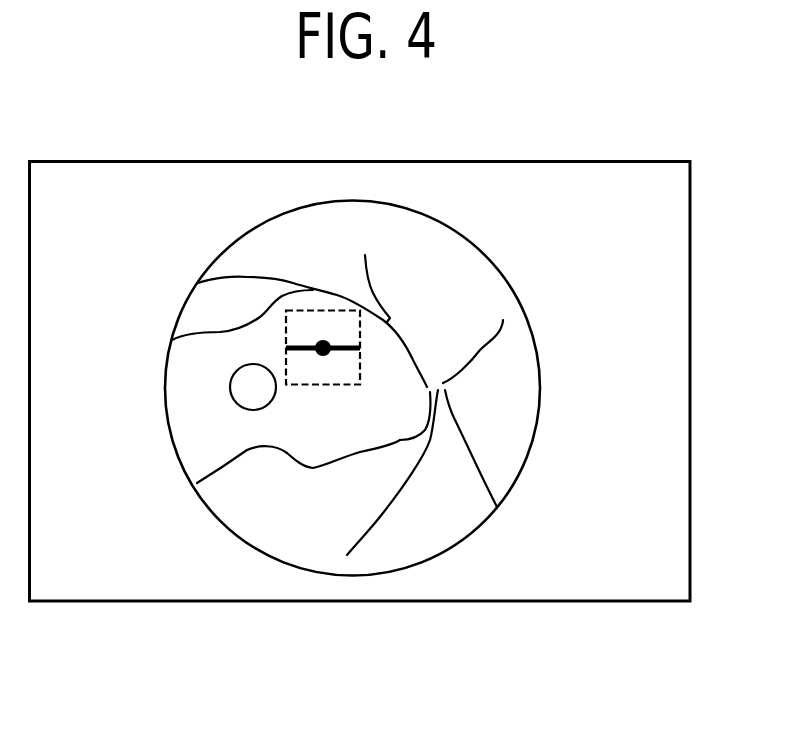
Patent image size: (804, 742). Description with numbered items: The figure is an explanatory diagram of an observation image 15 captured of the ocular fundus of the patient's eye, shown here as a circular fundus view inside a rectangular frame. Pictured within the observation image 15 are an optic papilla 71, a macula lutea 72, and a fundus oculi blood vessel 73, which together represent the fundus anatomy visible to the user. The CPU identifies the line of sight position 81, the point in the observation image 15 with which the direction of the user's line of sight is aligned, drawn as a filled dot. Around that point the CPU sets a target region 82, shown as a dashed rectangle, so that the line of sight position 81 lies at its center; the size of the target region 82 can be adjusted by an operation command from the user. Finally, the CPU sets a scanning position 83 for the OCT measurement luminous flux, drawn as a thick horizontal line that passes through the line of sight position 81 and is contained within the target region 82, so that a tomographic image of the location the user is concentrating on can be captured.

The observation image 15 is at (645, 161).
The optic papilla 71 is at (452, 358).
The macula lutea 72 is at (253, 386).
The fundus oculi blood vessel 73 is at (313, 468).
The line of sight position 81 is at (323, 340).
The target region 82 is at (298, 311).
The scanning position 83 is at (353, 346).